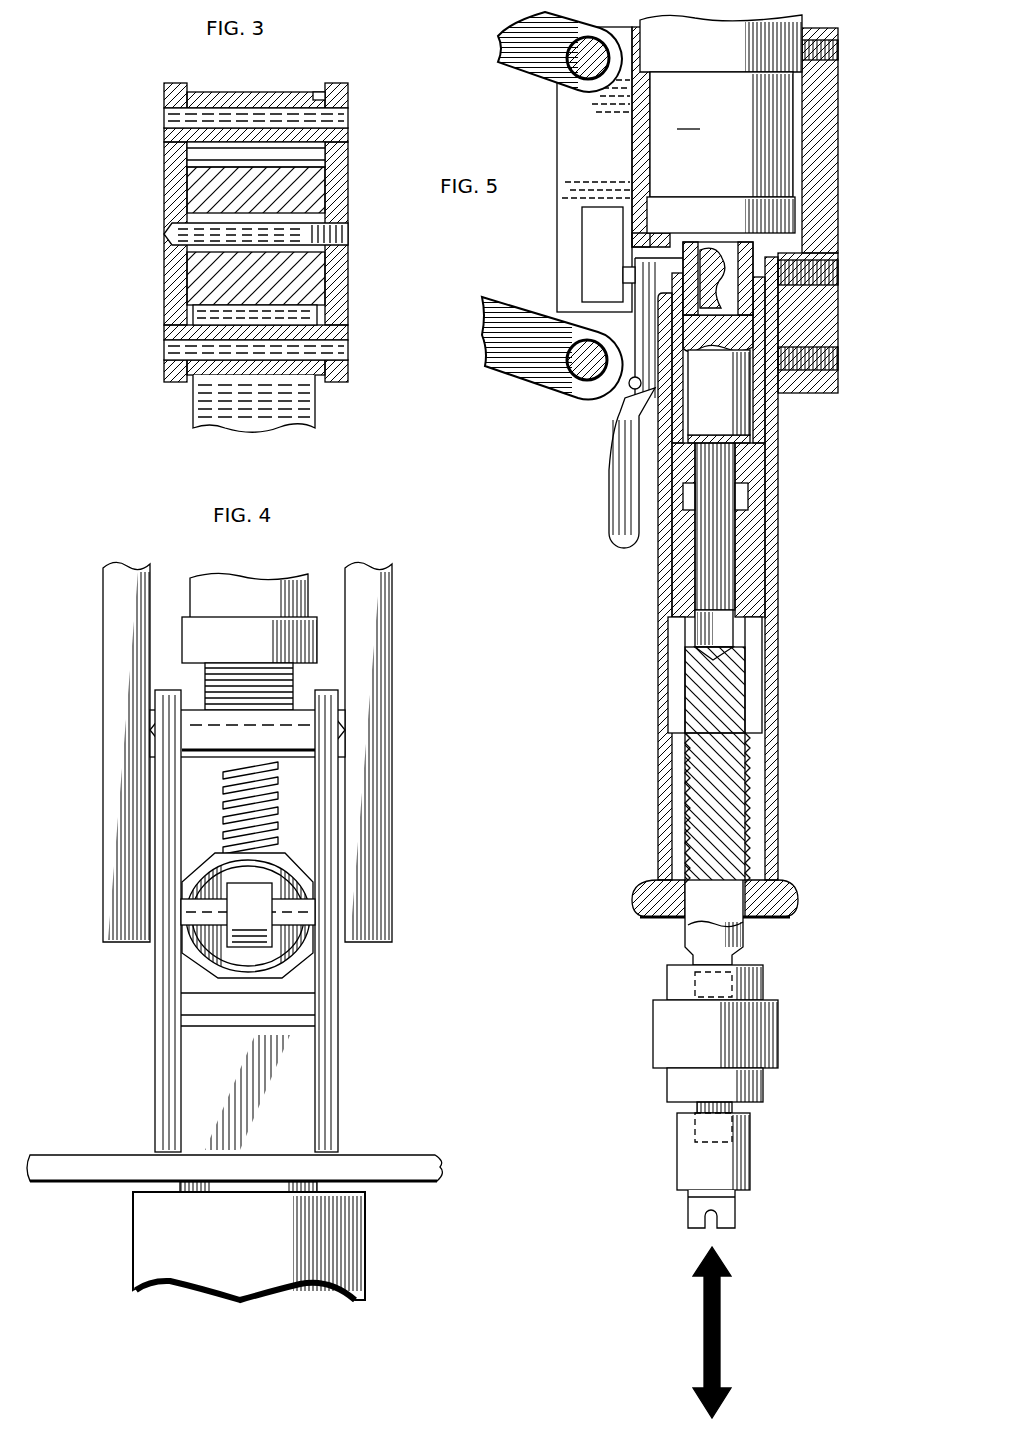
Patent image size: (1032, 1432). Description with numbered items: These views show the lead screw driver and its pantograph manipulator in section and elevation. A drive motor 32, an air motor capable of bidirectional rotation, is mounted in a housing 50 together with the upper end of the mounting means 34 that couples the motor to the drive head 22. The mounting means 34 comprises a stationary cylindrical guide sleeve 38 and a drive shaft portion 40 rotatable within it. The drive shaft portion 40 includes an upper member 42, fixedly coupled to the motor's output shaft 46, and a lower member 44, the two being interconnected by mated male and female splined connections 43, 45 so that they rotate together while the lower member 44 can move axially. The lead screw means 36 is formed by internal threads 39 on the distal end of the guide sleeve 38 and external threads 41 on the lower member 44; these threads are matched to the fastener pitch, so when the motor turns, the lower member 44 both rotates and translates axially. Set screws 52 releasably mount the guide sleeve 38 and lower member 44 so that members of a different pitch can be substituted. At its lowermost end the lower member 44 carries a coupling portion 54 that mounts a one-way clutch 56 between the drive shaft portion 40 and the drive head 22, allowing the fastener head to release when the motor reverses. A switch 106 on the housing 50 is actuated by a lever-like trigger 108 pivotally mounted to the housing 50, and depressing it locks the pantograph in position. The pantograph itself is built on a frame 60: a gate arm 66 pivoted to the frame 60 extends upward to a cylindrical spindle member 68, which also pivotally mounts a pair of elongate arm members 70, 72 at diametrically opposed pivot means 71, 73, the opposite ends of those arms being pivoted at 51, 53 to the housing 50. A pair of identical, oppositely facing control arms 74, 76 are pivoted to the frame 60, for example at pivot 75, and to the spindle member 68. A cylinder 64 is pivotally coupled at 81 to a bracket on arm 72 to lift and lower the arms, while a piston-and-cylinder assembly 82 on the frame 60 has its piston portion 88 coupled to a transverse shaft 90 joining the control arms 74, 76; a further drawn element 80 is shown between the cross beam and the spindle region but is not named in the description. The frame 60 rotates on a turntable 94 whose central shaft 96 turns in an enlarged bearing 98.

In FIG. 5, the drive head 22 is at (662, 1153).
In FIG. 5, the drive motor 32 is at (721, 124).
In FIG. 5, the mounting means 34 is at (638, 665).
In FIG. 5, the lead screw means 36 is at (655, 800).
In FIG. 5, the guide sleeve 38 is at (777, 493).
In FIG. 5, the internal threads 39 is at (735, 820).
In FIG. 5, the drive shaft portion 40 is at (662, 565).
In FIG. 5, the external threads 41 is at (748, 773).
In FIG. 5, the upper member 42 is at (737, 402).
In FIG. 5, the splined connection 43 is at (735, 458).
In FIG. 5, the lower member 44 is at (753, 605).
In FIG. 5, the splined connection 45 is at (740, 637).
In FIG. 5, the output shaft 46 is at (723, 243).
In FIG. 5, the housing 50 is at (577, 114).
In FIG. 5, the pivot 51 is at (580, 62).
In FIG. 5, the set screws 52 is at (822, 360).
In FIG. 5, the pivot 53 is at (580, 392).
In FIG. 5, the coupling portion 54 is at (738, 958).
In FIG. 5, the one-way clutch 56 is at (663, 1026).
In FIG. 4, the frame 60 is at (330, 1015).
In FIG. 4, the cylinder 64 is at (296, 583).
In FIG. 3, the gate arm 66 is at (315, 407).
In FIG. 3, the spindle member 68 is at (171, 162).
In FIG. 3, the arm member 70 is at (292, 95).
In FIG. 5, the arm member 70 is at (525, 40).
In FIG. 3, the pivot means 71 is at (344, 120).
In FIG. 3, the arm member 72 is at (220, 382).
In FIG. 5, the arm member 72 is at (505, 345).
In FIG. 3, the pivot means 73 is at (342, 355).
In FIG. 4, the control arm 74 is at (108, 592).
In FIG. 4, the pivot 75 is at (153, 730).
In FIG. 4, the control arm 76 is at (382, 632).
In FIG. 4, the spring 80 is at (268, 803).
In FIG. 4, the pivot 81 is at (193, 867).
In FIG. 4, the piston-and-cylinder assembly 82 is at (301, 950).
In FIG. 4, the piston portion 88 is at (260, 950).
In FIG. 4, the transverse shaft 90 is at (185, 940).
In FIG. 4, the turntable 94 is at (442, 1159).
In FIG. 4, the central shaft 96 is at (319, 1186).
In FIG. 4, the bearing 98 is at (355, 1269).
In FIG. 5, the switch 106 is at (597, 236).
In FIG. 5, the trigger 108 is at (627, 447).